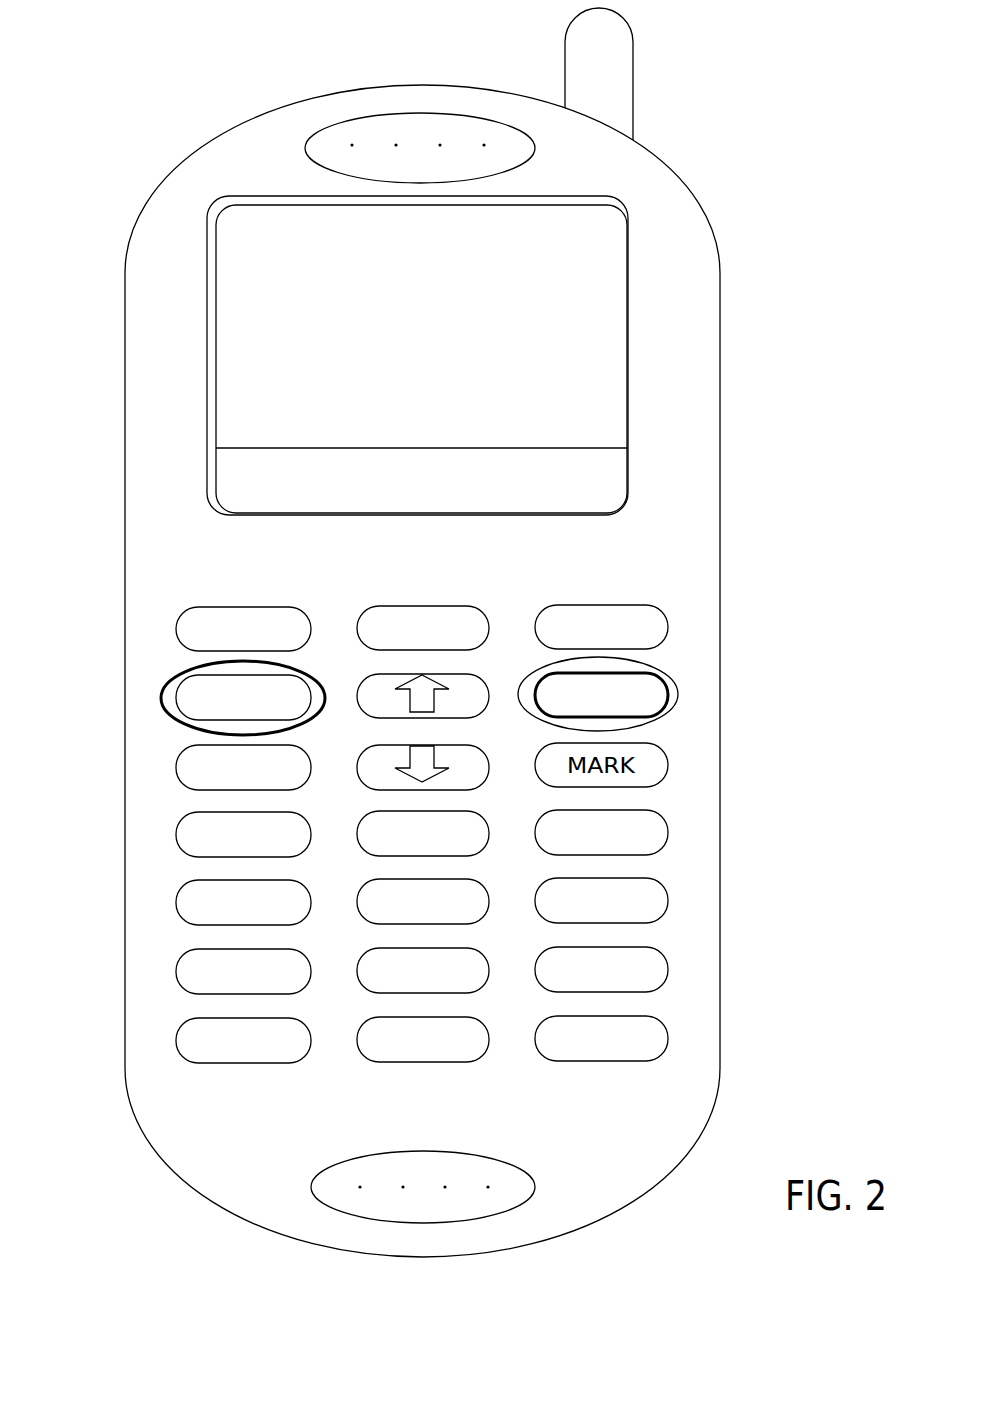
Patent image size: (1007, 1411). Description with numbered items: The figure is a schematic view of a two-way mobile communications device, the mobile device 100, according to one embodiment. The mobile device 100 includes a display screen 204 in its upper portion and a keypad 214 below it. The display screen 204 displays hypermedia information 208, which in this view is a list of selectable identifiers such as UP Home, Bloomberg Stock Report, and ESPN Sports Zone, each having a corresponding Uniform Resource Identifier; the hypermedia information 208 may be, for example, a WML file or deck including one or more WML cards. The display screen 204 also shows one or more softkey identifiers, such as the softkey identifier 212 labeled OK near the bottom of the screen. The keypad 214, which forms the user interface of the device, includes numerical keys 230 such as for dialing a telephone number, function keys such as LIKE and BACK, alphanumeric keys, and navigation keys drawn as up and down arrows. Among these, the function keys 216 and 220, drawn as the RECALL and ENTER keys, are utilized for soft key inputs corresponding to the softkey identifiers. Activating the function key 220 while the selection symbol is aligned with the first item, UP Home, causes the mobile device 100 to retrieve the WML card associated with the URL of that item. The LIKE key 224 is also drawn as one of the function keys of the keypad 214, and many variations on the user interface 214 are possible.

The mobile device 100 is at (718, 272).
The display screen 204 is at (632, 462).
The hypermedia information 208 is at (542, 266).
The softkey identifier 212 is at (285, 482).
The keypad 214 is at (636, 554).
The function key 216 is at (678, 682).
The function key 220 is at (160, 698).
The LIKE key 224 is at (175, 773).
The numerical keys 230 is at (703, 808).